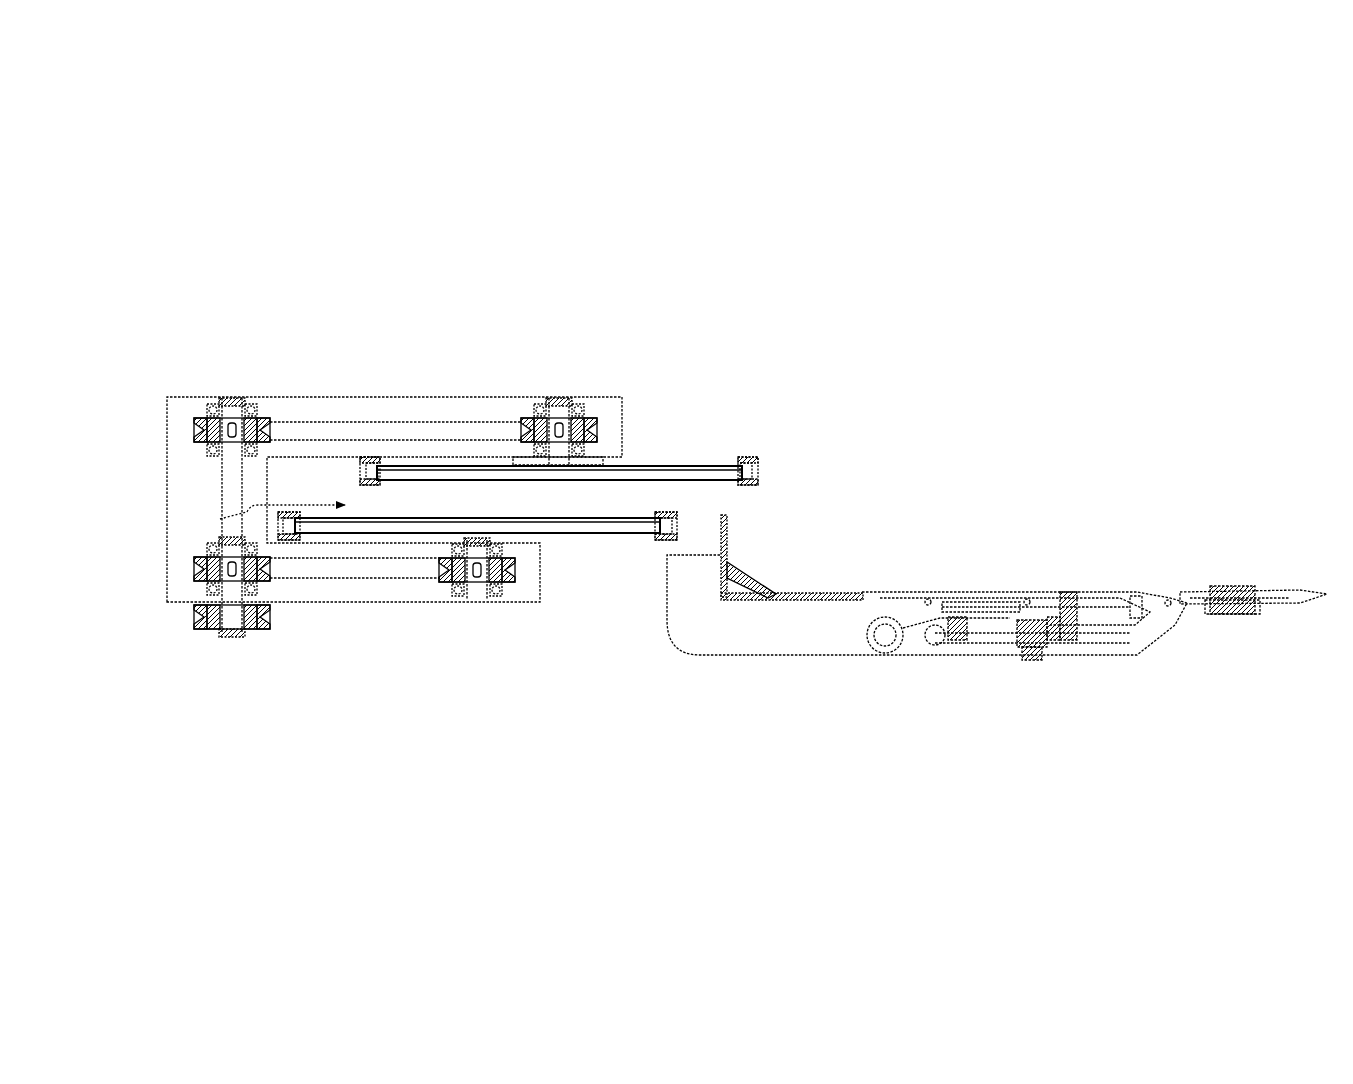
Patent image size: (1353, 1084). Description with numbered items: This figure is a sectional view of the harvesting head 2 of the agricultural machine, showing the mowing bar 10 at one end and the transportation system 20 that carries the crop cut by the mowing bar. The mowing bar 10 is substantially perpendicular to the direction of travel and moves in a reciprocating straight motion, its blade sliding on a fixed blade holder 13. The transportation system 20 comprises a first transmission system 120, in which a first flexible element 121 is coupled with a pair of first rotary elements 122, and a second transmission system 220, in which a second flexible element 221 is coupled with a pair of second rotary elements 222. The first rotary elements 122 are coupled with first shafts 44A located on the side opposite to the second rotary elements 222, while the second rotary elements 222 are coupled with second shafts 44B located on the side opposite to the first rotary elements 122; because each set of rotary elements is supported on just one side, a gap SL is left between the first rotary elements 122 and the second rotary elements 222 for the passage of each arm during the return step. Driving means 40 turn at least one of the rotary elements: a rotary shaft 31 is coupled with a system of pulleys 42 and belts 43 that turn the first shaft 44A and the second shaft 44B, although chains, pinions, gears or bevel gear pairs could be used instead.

The harvesting head 2 is at (813, 642).
The mowing bar 10 is at (1233, 596).
The fixed blade holder 13 is at (1247, 617).
The transportation system 20 is at (418, 296).
The drive shaft 31 is at (227, 478).
The driving means 40 is at (163, 427).
The pulleys 42 is at (203, 420).
The belts 43 is at (303, 433).
The first shafts 44A is at (553, 402).
The second shafts 44B is at (473, 600).
The first transmission system 120 is at (768, 470).
The first flexible element 121 is at (752, 455).
The first rotary elements 122 is at (687, 466).
The second transmission system 220 is at (690, 533).
The second flexible element 221 is at (660, 548).
The second rotary elements 222 is at (588, 534).
The gap SL is at (220, 519).